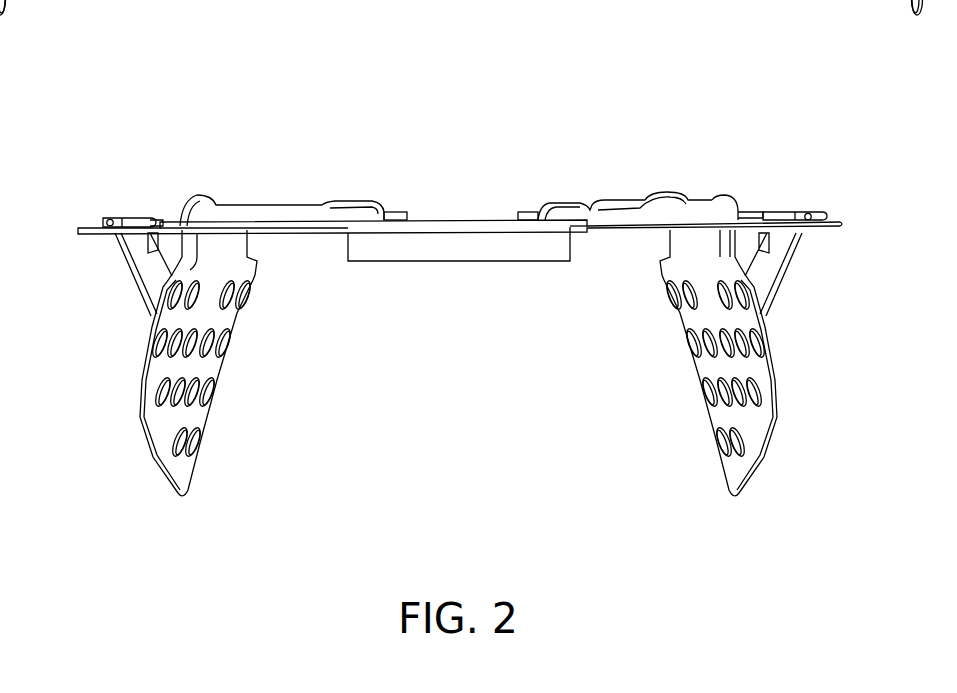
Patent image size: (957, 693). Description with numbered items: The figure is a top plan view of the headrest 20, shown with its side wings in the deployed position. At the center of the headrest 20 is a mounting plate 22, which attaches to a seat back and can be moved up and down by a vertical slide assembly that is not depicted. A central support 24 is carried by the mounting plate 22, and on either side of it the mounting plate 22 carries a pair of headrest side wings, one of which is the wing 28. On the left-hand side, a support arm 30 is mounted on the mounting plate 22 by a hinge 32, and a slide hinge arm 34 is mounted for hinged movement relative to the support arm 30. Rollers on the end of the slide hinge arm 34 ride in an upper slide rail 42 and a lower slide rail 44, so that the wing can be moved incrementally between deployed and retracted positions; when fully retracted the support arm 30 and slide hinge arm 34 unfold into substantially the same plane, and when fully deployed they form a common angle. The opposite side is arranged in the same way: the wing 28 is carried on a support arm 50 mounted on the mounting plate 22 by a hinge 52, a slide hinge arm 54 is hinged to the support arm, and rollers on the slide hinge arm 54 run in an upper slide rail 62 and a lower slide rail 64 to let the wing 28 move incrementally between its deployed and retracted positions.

The headrest 20 is at (128, 153).
The mounting plate 22 is at (497, 218).
The central support 24 is at (467, 237).
The headrest side wing 28 is at (167, 427).
The support arm 30 is at (150, 280).
The hinge 32 is at (117, 213).
The slide hinge arm 34 is at (190, 232).
The upper slide rail 42 is at (194, 210).
The lower slide rail 44 is at (347, 215).
The support arm 50 is at (782, 252).
The hinge 52 is at (800, 217).
The slide hinge arm 54 is at (733, 237).
The upper slide rail 62 is at (672, 210).
The lower slide rail 64 is at (545, 204).